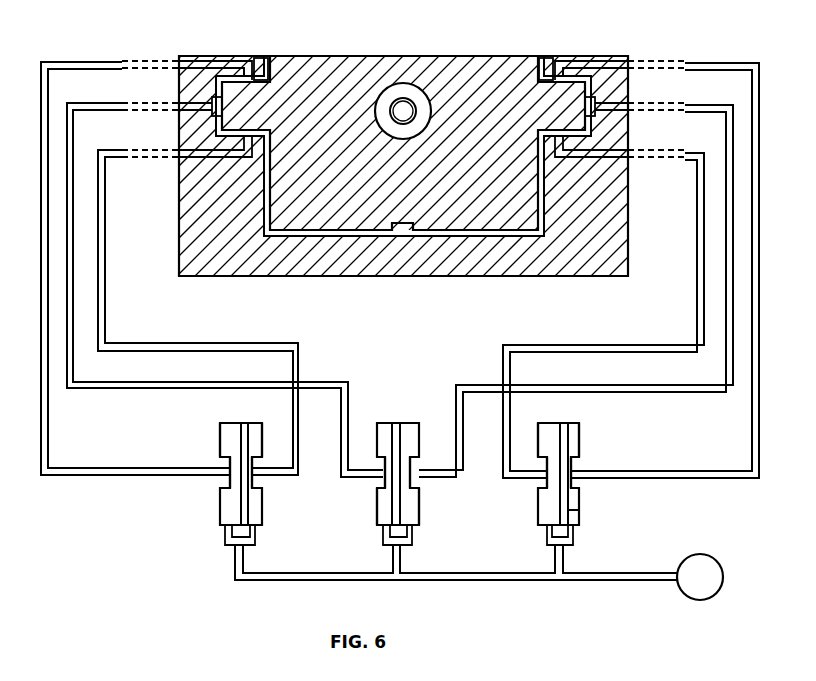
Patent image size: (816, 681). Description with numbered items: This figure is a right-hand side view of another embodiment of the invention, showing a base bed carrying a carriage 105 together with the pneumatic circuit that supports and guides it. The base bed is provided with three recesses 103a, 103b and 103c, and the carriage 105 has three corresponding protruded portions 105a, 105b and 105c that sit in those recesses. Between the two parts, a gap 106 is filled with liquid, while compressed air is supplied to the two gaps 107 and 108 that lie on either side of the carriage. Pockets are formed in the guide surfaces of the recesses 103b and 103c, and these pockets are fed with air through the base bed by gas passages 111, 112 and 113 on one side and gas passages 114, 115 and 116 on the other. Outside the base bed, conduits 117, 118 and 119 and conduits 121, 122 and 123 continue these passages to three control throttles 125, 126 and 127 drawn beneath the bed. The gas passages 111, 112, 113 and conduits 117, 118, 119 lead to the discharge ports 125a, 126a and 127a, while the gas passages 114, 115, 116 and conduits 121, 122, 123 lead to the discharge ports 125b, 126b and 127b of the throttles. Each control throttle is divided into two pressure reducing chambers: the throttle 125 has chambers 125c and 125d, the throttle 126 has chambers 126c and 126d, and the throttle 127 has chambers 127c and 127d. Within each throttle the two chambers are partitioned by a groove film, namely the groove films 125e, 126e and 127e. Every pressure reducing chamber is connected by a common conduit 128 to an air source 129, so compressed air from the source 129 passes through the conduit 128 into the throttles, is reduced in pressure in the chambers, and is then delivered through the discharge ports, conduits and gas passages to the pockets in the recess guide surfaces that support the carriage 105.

The recess 103a is at (472, 232).
The recess 103b is at (234, 78).
The recess 103c is at (578, 78).
The carriage 105 is at (409, 72).
The protruded portion 105a is at (433, 204).
The protruded portion 105b is at (286, 44).
The protruded portion 105c is at (546, 66).
The gap 106 is at (346, 236).
The gap 107 is at (266, 112).
The gap 108 is at (559, 130).
The gas passage 111 is at (196, 60).
The gas passage 112 is at (191, 106).
The gas passage 113 is at (191, 152).
The gas passage 114 is at (612, 63).
The gas passage 115 is at (612, 106).
The gas passage 116 is at (612, 155).
The conduit 117 is at (48, 409).
The conduit 118 is at (86, 386).
The conduit 119 is at (105, 318).
The conduit 121 is at (752, 405).
The conduit 122 is at (726, 364).
The conduit 123 is at (697, 314).
The control throttle 125 is at (235, 474).
The discharge port 125a is at (229, 468).
The discharge port 125b is at (257, 475).
The pressure reducing chamber 125c is at (210, 432).
The pressure reducing chamber 125d is at (267, 415).
The groove film 125e is at (241, 478).
The control throttle 126 is at (388, 466).
The discharge port 126a is at (383, 472).
The discharge port 126b is at (413, 473).
The pressure reducing chamber 126c is at (387, 522).
The pressure reducing chamber 126d is at (410, 515).
The groove film 126e is at (401, 438).
The control throttle 127 is at (574, 472).
The discharge port 127a is at (545, 481).
The discharge port 127b is at (578, 470).
The pressure reducing chamber 127c is at (545, 434).
The pressure reducing chamber 127d is at (573, 431).
The groove film 127e is at (579, 513).
The conduit 128 is at (504, 582).
The air source 129 is at (706, 556).